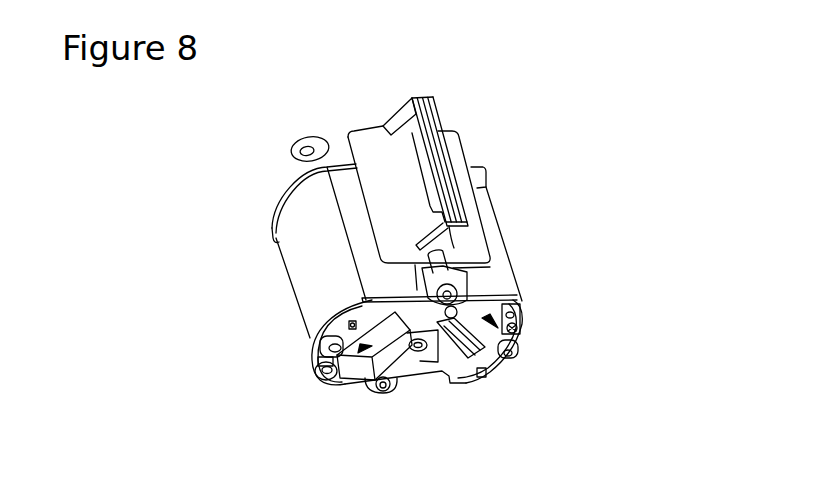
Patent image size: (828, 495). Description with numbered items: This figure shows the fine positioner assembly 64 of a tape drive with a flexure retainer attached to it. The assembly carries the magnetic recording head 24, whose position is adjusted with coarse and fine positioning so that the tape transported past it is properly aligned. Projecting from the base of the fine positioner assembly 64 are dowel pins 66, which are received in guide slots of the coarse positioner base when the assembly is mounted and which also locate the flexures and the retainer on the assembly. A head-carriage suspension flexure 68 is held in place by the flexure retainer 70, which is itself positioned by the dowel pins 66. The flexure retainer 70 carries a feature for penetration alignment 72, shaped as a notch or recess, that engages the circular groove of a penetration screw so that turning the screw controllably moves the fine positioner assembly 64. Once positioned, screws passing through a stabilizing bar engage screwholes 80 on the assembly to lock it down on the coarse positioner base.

The fine positioner assembly 64 is at (150, 232).
The magnetic recording head 24 is at (430, 110).
The screwholes 80 is at (292, 149).
The dowel pins 66 is at (350, 324).
The head-carriage suspension flexure 68 is at (317, 363).
The flexure retainer 70 is at (519, 333).
The feature for penetration alignment 72 is at (453, 318).